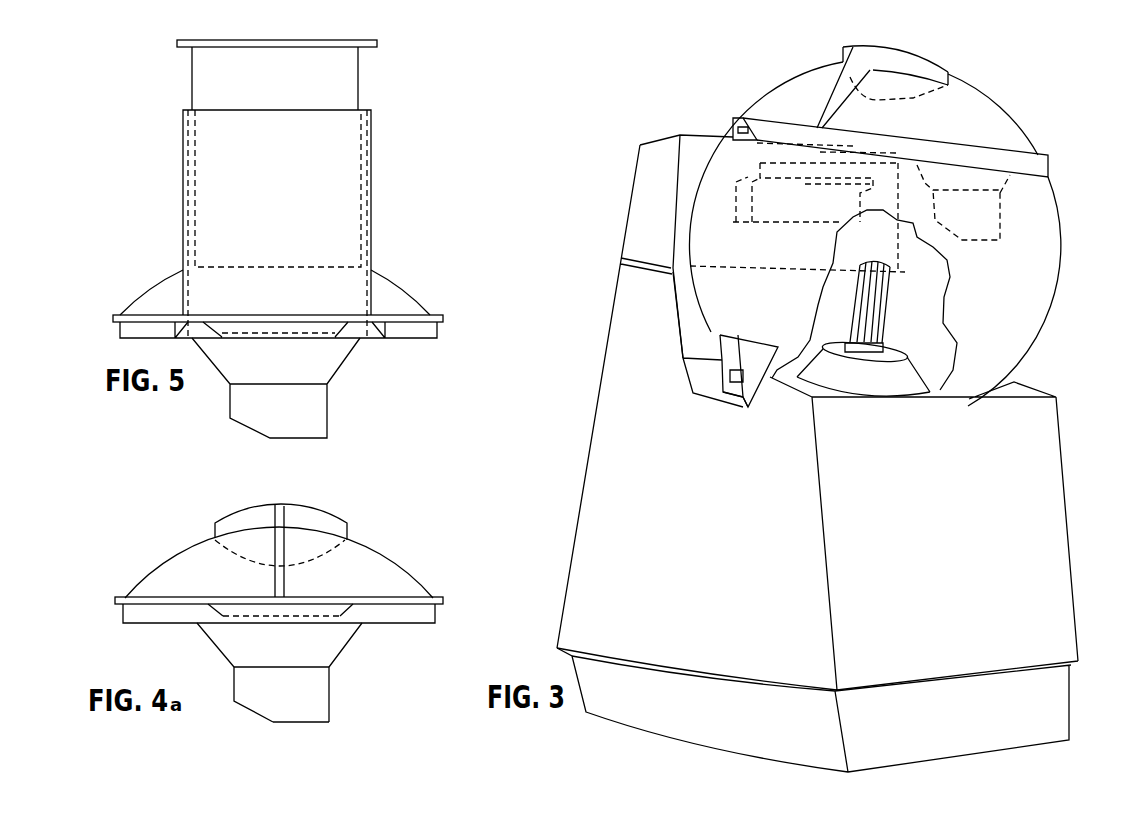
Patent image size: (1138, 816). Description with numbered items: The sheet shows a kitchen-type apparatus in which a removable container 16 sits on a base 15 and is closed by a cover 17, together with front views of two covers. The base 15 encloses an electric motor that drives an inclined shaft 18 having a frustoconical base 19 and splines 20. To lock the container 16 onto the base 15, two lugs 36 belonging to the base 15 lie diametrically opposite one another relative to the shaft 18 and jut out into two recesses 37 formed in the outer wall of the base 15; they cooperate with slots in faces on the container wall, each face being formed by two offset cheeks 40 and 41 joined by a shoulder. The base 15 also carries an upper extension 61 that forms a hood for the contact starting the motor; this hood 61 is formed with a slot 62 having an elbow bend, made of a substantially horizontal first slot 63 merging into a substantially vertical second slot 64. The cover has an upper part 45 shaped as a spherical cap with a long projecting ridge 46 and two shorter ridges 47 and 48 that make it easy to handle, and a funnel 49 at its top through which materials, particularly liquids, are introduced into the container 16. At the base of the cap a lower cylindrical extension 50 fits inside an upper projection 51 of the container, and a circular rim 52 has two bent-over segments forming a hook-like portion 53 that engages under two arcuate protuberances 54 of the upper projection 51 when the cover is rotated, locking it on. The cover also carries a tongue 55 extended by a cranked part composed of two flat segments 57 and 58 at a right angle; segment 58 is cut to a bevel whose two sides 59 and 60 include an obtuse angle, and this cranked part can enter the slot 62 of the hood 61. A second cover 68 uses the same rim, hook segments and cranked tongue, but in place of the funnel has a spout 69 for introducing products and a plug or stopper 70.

In FIG. 3, the base 15 is at (1057, 495).
In FIG. 3, the removable container 16 is at (1052, 283).
In FIG. 4A, the cover 17 is at (412, 570).
In FIG. 3, the cover 17 is at (1015, 127).
In FIG. 3, the inclined shaft 18 is at (855, 308).
In FIG. 3, the frustoconical base 19 is at (880, 392).
In FIG. 3, the splines 20 is at (882, 315).
In FIG. 3, the lugs 36 is at (746, 404).
In FIG. 3, the recesses 37 is at (697, 387).
In FIG. 3, the cheek 40 is at (738, 342).
In FIG. 3, the cheek 41 is at (782, 345).
In FIG. 4A, the upper part 45 is at (385, 562).
In FIG. 4A, the long projecting ridge 46 is at (273, 580).
In FIG. 3, the long projecting ridge 46 is at (833, 90).
In FIG. 4A, the shorter ridge 47 is at (223, 522).
In FIG. 3, the shorter ridge 47 is at (840, 60).
In FIG. 4A, the shorter ridge 48 is at (315, 515).
In FIG. 3, the shorter ridge 48 is at (950, 77).
In FIG. 4A, the funnel 49 is at (303, 552).
In FIG. 3, the funnel 49 is at (917, 95).
In FIG. 4A, the lower cylindrical extension 50 is at (427, 617).
In FIG. 3, the upper projection 51 is at (1050, 158).
In FIG. 4A, the circular rim 52 is at (147, 597).
In FIG. 4A, the hook-like portion 53 is at (213, 597).
In FIG. 3, the arcuate protuberances 54 is at (733, 130).
In FIG. 4A, the tongue 55 is at (213, 643).
In FIG. 4A, the flat segment 57 is at (298, 667).
In FIG. 4A, the flat segment 58 is at (323, 698).
In FIG. 4A, the side 59 is at (247, 710).
In FIG. 4A, the side 60 is at (302, 720).
In FIG. 3, the upper extension 61 is at (640, 228).
In FIG. 3, the slot 62 is at (808, 183).
In FIG. 3, the first slot 63 is at (778, 163).
In FIG. 3, the second slot 64 is at (735, 203).
In FIG. 5, the cover 68 is at (383, 282).
In FIG. 5, the spout 69 is at (183, 203).
In FIG. 5, the plug or stopper 70 is at (197, 77).